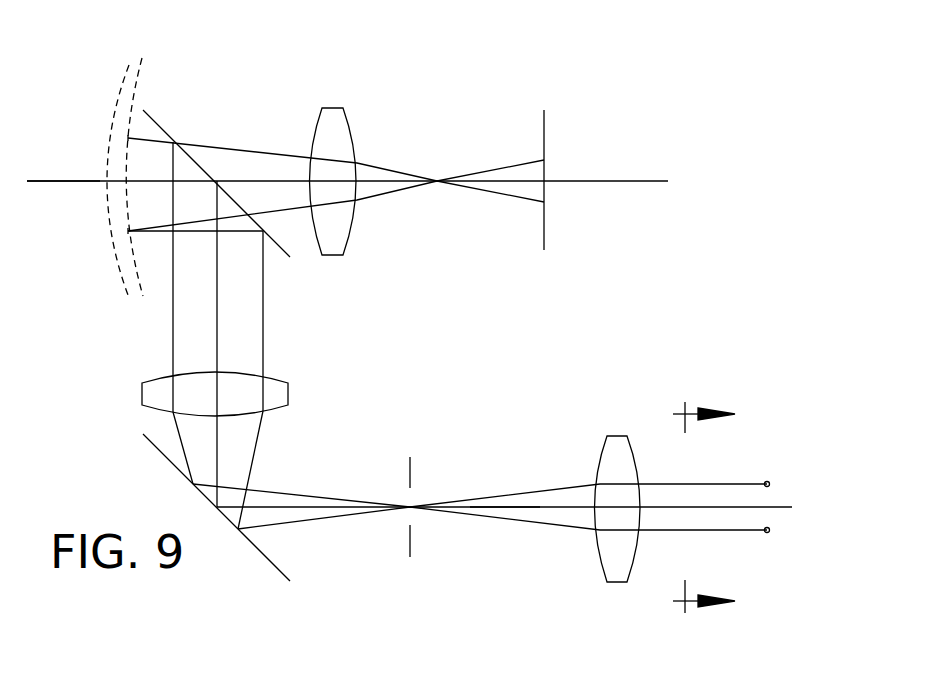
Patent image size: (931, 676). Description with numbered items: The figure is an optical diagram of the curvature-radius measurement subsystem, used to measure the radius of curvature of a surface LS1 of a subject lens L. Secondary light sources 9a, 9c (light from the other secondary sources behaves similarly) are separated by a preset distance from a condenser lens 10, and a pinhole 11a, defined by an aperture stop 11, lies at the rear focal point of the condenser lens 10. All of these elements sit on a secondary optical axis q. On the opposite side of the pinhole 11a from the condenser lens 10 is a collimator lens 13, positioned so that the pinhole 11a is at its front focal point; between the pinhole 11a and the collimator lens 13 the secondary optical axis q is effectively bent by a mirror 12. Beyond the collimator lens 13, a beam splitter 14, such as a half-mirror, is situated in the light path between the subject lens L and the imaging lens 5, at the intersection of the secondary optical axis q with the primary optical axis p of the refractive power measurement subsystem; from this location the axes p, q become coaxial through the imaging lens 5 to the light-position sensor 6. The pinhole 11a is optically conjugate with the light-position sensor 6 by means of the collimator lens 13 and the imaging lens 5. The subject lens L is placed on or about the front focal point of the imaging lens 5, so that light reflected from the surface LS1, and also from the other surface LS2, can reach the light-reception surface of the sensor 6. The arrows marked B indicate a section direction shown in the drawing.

The imaging lens 5 is at (335, 108).
The light-position sensor 6 is at (545, 130).
The secondary light source 9a is at (770, 484).
The secondary light source 9c is at (770, 530).
The condenser lens 10 is at (617, 582).
The aperture stop 11 is at (408, 547).
The pinhole 11a is at (412, 515).
The mirror 12 is at (265, 566).
The collimator lens 13 is at (289, 393).
The beam splitter 14 is at (278, 252).
The subject lens L is at (142, 58).
The surface of the subject lens LS1 is at (138, 92).
The surface of the subject lens LS2 is at (118, 97).
The primary optical axis p is at (62, 182).
The secondary optical axis q is at (505, 505).
The section line B- B is at (697, 512).